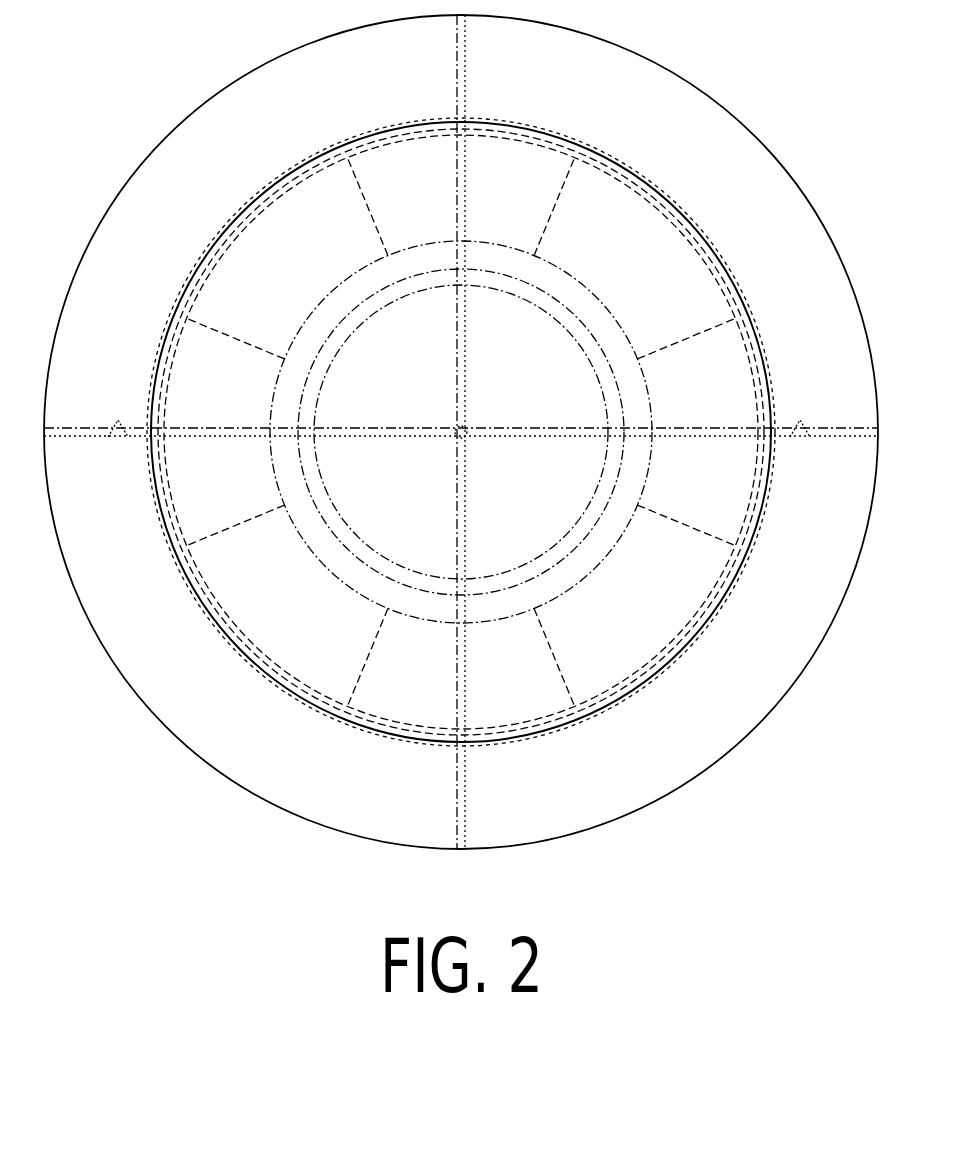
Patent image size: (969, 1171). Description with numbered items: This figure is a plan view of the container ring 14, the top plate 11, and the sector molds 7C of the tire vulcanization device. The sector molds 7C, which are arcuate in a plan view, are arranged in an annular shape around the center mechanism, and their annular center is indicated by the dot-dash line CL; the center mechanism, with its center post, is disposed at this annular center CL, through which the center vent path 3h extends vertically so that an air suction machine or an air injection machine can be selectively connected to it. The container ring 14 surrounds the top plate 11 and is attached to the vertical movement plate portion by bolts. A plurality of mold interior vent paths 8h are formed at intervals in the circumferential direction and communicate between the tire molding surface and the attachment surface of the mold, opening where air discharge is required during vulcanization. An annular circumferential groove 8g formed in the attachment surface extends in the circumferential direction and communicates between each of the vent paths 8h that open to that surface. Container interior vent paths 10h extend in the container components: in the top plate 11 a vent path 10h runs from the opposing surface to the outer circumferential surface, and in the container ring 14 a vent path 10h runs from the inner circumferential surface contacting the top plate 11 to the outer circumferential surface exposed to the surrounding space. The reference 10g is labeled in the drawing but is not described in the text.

The container ring 14 is at (770, 185).
The top plate 11 is at (620, 167).
The sector mold 7C is at (308, 197).
The groove 10g is at (224, 260).
The container interior vent path 10h is at (118, 438).
The circumferential groove 8g is at (548, 325).
The mold interior vent path 8h is at (460, 272).
The center vent path 3h is at (455, 430).
The annular center CL is at (468, 430).